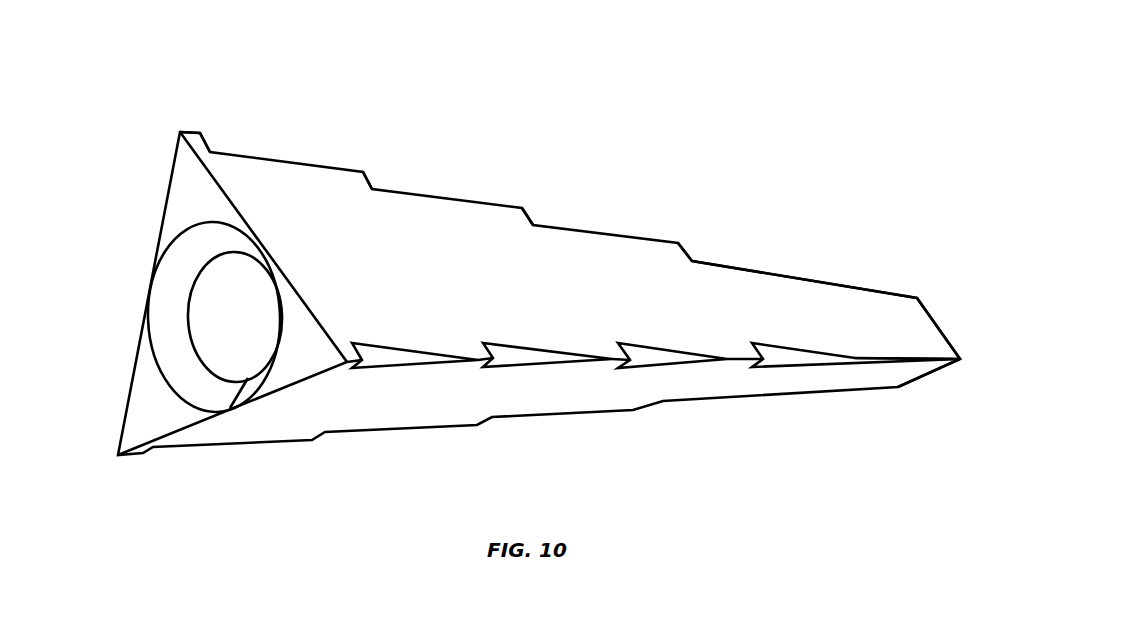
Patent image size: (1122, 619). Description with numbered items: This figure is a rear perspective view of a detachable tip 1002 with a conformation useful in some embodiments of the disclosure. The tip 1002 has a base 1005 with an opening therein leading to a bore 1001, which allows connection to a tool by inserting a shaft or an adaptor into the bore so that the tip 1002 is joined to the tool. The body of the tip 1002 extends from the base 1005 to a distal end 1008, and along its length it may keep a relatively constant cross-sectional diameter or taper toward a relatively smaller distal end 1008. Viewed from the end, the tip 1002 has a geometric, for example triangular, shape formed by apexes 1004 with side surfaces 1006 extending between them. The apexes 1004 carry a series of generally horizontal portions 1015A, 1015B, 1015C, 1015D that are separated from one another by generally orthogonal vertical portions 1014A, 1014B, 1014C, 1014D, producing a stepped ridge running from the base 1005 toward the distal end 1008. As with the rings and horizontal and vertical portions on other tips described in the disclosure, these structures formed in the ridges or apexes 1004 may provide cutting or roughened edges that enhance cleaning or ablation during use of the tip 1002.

The tip 1002 is at (660, 142).
The apexes 1004 is at (195, 130).
The base 1005 is at (190, 197).
The bore 1001 is at (205, 345).
The vertical portion 1014A is at (208, 142).
The vertical portion 1014B is at (367, 180).
The vertical portion 1014C is at (532, 218).
The vertical portion 1014D is at (690, 255).
The side surfaces 1006 is at (835, 315).
The distal end 1008 is at (943, 328).
The horizontal portion 1015A is at (390, 358).
The horizontal portion 1015B is at (522, 359).
The horizontal portion 1015C is at (658, 353).
The horizontal portion 1015D is at (790, 353).